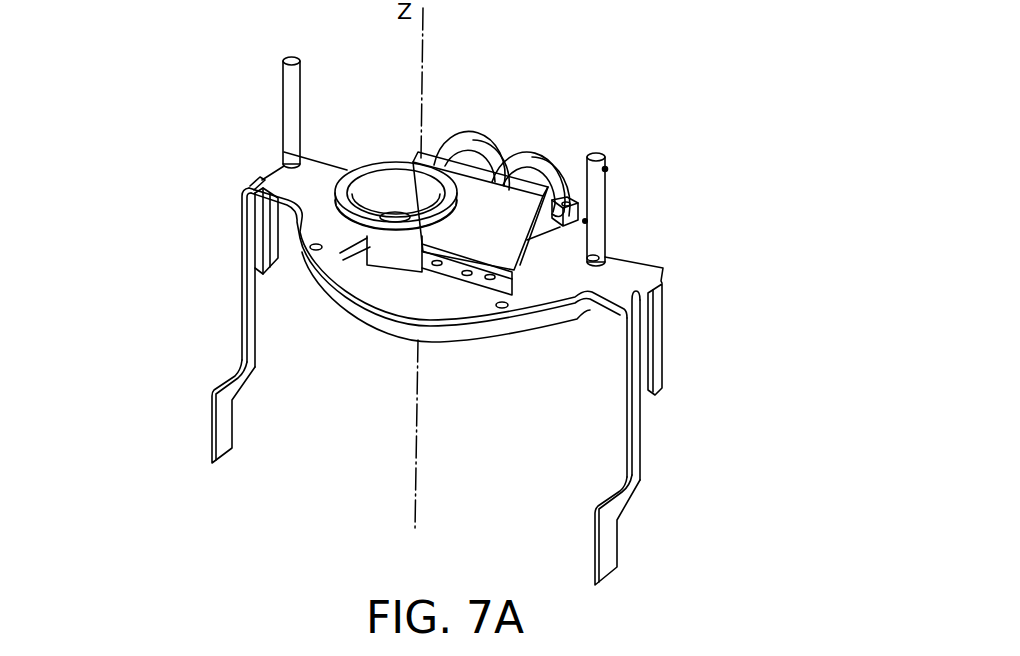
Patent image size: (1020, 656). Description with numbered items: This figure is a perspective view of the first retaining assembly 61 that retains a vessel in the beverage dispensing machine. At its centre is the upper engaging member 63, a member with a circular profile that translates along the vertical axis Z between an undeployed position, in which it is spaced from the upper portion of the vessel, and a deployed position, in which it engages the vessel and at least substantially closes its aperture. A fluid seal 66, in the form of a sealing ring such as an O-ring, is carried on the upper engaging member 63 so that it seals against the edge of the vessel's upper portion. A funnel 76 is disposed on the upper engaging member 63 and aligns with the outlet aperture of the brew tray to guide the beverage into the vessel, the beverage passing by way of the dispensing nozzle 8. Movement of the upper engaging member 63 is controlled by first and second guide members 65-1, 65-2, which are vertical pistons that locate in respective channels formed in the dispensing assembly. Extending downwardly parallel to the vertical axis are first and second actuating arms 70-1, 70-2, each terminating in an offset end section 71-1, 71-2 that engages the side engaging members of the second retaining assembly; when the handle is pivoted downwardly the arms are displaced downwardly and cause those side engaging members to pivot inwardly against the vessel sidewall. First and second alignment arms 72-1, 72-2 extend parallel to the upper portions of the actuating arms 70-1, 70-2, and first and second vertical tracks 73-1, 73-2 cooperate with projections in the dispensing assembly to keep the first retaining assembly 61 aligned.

The first retaining assembly 61 is at (540, 100).
The upper engaging member 63 is at (447, 306).
The first guide member 65-1 is at (291, 104).
The second guide member 65-2 is at (598, 197).
The fluid seal 66 is at (372, 322).
The first actuating arm 70-1 is at (245, 306).
The second actuating arm 70-2 is at (642, 456).
The offset end section 71-1 is at (222, 420).
The offset end section 71-2 is at (612, 542).
The first alignment arm 72-1 is at (270, 224).
The second alignment arm 72-2 is at (662, 345).
The first vertical track 73-1 is at (262, 250).
The second vertical track 73-2 is at (645, 380).
The funnel 76 is at (397, 173).
The dispensing nozzle 8 is at (383, 256).